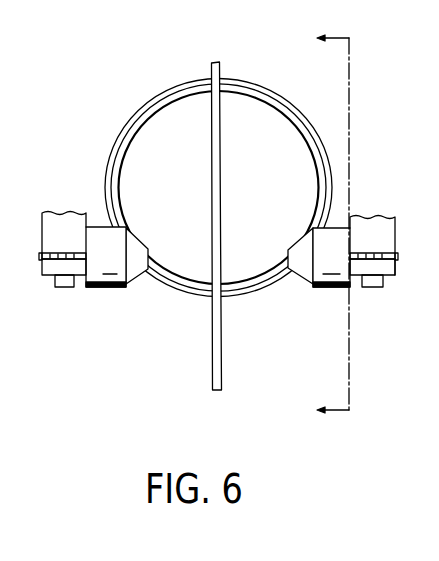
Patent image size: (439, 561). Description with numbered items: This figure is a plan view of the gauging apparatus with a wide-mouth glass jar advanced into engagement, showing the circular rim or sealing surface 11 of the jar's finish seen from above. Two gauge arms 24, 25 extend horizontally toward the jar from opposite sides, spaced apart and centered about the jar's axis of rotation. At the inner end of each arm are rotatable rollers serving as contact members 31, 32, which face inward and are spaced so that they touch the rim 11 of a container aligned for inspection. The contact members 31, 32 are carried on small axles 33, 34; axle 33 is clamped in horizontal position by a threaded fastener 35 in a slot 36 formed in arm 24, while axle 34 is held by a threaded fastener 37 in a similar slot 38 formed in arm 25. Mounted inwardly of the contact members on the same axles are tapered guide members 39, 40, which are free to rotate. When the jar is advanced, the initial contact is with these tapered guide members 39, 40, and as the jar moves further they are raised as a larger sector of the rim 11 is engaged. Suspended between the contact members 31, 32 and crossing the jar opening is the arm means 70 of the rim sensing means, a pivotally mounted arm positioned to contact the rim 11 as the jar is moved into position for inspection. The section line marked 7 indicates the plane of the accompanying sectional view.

The sealing surface 11 is at (250, 83).
The gauge arm 24 is at (383, 244).
The gauge arm 25 is at (77, 244).
The contact member 31 is at (342, 268).
The contact member 32 is at (117, 270).
The axle 33 is at (395, 261).
The axle 34 is at (41, 259).
The threaded fastener 35 is at (370, 288).
The slot 36 is at (390, 255).
The threaded fastener 37 is at (74, 287).
The slot 38 is at (53, 256).
The tapered guide member 39 is at (303, 266).
The tapered guide member 40 is at (133, 270).
The arm means 70 is at (213, 379).
The section line 7- 7 is at (323, 225).